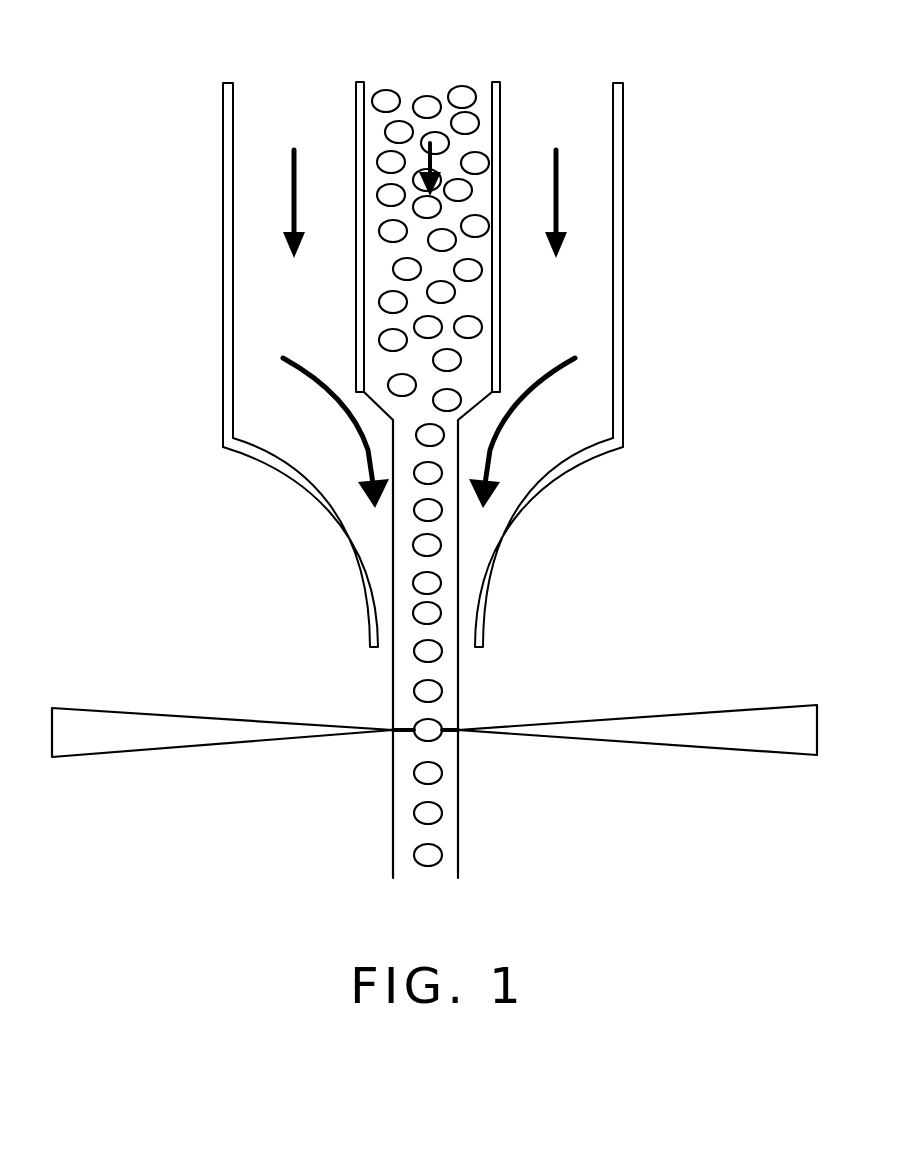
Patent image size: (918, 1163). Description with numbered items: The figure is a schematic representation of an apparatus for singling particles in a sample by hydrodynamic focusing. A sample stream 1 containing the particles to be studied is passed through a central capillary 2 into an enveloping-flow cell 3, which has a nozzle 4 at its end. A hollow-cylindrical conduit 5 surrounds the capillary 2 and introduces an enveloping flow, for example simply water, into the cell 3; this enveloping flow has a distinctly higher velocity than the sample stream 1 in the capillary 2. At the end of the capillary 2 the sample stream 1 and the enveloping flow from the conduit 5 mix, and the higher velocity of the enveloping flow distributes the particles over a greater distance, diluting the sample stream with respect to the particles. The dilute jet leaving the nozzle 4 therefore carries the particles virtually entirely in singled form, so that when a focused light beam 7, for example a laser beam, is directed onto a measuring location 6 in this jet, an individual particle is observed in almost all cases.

The sample stream 1 is at (452, 108).
The capillary 2 is at (500, 128).
The enveloping-flow cell 3 is at (630, 361).
The nozzle 4 is at (503, 546).
The hollow-cylindrical conduit 5 is at (285, 113).
The measuring location 6 is at (413, 730).
The focused light beam 7 is at (683, 712).